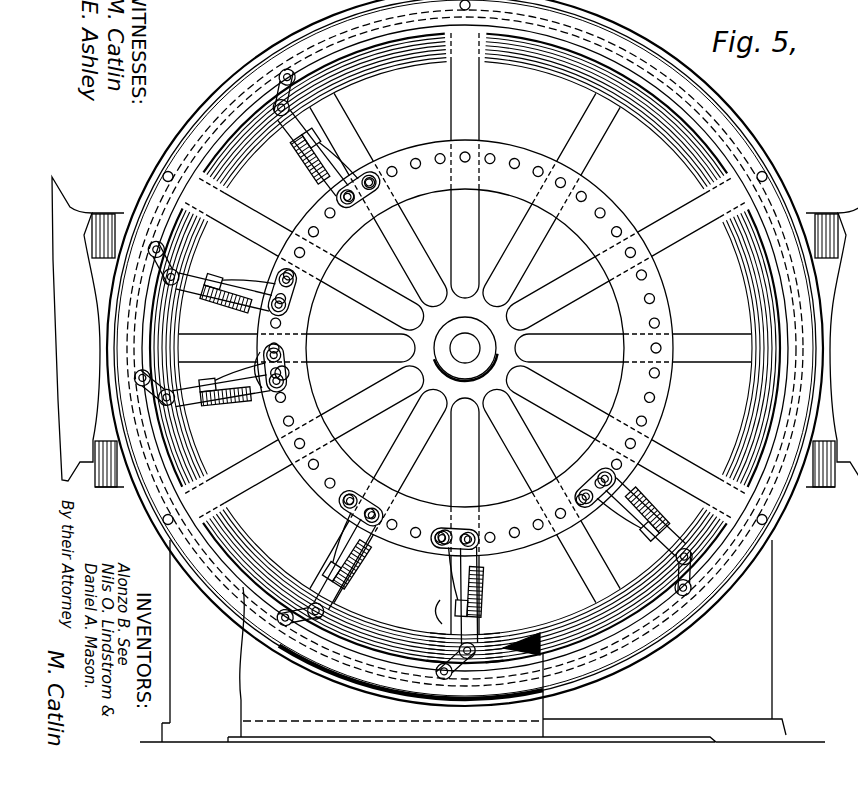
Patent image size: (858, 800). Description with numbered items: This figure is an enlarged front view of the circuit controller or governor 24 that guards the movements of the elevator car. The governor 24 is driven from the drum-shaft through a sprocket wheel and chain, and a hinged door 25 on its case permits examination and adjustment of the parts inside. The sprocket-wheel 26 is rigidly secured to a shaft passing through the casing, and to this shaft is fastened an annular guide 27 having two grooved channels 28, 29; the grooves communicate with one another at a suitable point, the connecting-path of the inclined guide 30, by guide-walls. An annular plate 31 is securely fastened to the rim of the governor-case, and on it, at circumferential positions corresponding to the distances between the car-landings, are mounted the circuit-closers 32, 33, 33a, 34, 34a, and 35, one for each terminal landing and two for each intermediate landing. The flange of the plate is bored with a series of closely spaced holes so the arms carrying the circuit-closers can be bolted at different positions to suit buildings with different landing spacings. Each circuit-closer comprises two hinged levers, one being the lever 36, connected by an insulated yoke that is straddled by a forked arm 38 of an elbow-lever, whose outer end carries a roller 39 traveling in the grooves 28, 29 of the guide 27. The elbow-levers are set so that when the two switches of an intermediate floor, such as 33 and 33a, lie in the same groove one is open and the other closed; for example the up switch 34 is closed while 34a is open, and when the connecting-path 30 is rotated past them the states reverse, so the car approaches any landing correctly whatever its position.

The governor 24 is at (465, 332).
The hinged door 25 is at (455, 332).
The sprocket-wheel 26 is at (465, 353).
The annular guide 27 is at (737, 254).
The grooved channel 28 is at (688, 133).
The grooved channel 29 is at (705, 170).
The connecting-path of the inclined guide 30 is at (556, 641).
The annular plate 31 is at (462, 346).
The circuit-closer 32 is at (632, 528).
The circuit-closer 33 is at (468, 588).
The circuit-closer 33a is at (328, 565).
The circuit-closer 34 is at (210, 395).
The circuit-closer 34a is at (219, 280).
The circuit-closer 35 is at (320, 136).
The hinged lever 36 is at (333, 470).
The forked arm 38 is at (317, 483).
The roller 39 is at (411, 674).